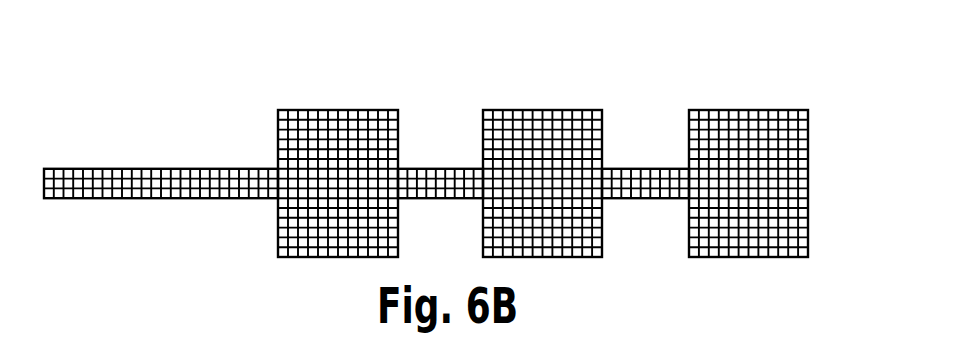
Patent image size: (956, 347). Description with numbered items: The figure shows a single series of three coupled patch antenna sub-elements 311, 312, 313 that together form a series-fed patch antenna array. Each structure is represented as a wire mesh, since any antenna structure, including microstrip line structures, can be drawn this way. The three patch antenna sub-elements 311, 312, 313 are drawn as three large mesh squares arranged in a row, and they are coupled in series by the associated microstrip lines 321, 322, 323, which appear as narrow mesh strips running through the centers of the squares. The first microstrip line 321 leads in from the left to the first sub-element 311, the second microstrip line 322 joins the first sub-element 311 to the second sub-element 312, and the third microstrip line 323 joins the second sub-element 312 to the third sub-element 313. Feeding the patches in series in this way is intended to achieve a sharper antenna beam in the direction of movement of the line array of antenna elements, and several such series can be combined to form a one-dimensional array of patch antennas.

The patch antenna sub-element 311 is at (340, 108).
The patch antenna sub-element 312 is at (545, 108).
The patch antenna sub-element 313 is at (752, 108).
The microstrip line 321 is at (165, 168).
The microstrip line 322 is at (438, 168).
The microstrip line 323 is at (643, 168).